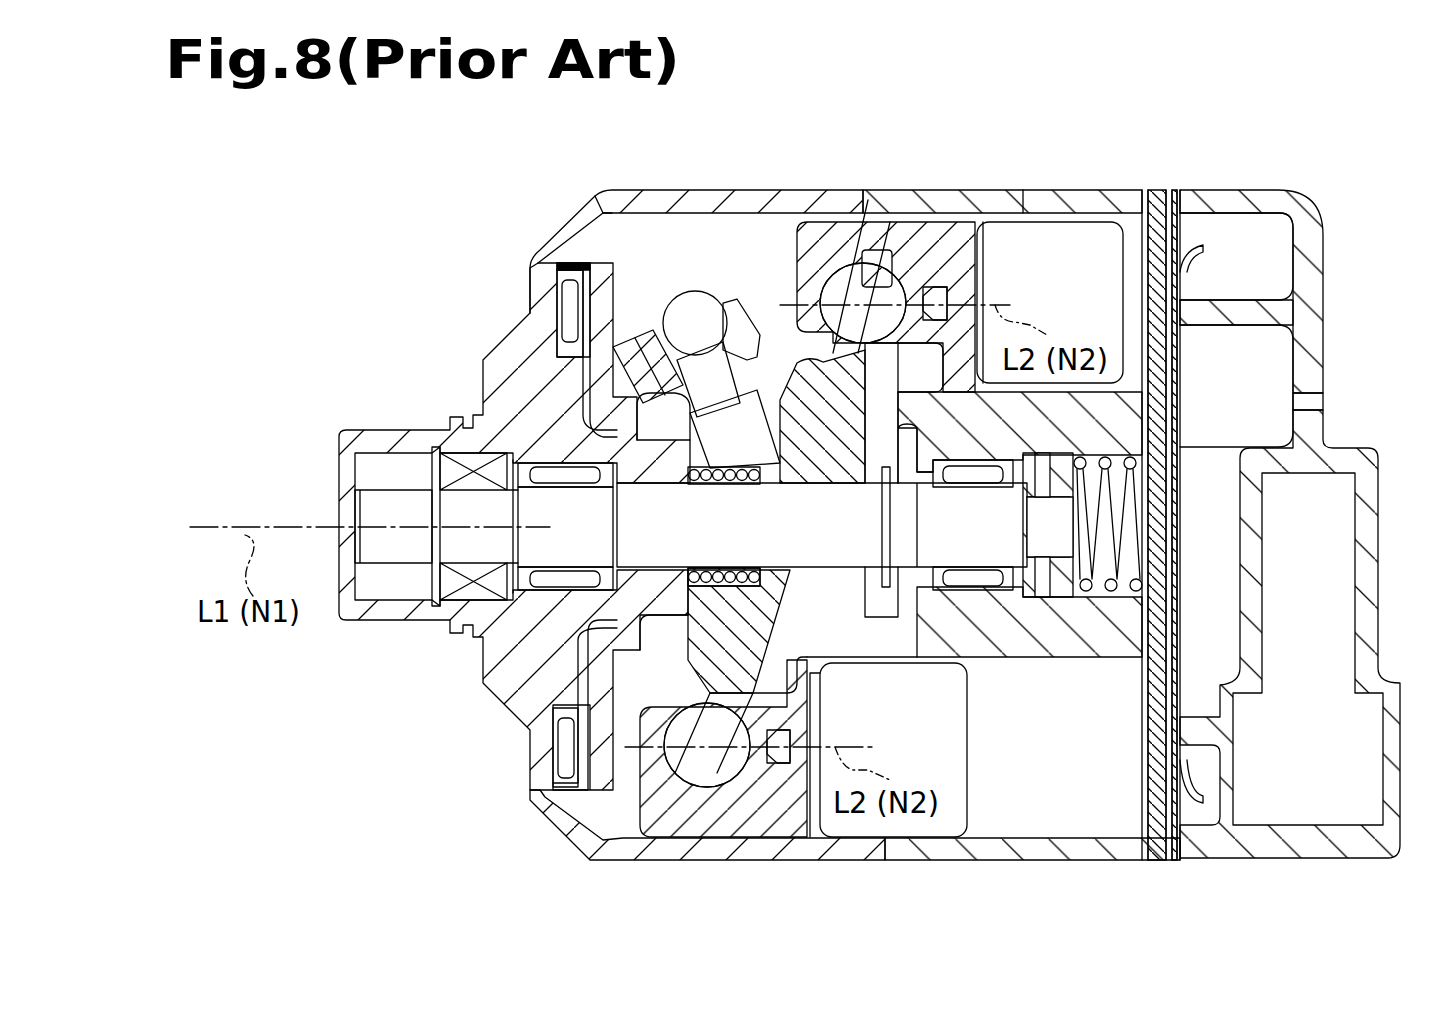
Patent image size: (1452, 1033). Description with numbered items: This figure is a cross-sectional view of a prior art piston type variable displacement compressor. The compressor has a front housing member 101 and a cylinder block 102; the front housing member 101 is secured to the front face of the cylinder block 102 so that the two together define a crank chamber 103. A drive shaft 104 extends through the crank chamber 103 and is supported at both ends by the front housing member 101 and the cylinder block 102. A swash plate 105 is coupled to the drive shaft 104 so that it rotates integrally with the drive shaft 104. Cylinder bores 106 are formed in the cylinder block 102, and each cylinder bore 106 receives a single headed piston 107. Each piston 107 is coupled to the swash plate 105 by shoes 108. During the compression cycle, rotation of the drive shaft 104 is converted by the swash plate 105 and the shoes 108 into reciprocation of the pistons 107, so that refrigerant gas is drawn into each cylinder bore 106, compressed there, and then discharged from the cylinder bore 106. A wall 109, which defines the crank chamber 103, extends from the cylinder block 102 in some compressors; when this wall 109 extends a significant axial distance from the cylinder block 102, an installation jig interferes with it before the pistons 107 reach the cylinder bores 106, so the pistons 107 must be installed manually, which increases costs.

The front housing member 101 is at (645, 860).
The cylinder block 102 is at (948, 858).
The crank chamber 103 is at (853, 605).
The drive shaft 104 is at (642, 572).
The swash plate 105 is at (775, 628).
The cylinder bore 106 is at (1020, 232).
The single headed piston 107 is at (941, 228).
The shoes 108 is at (890, 222).
The wall 109 is at (712, 200).